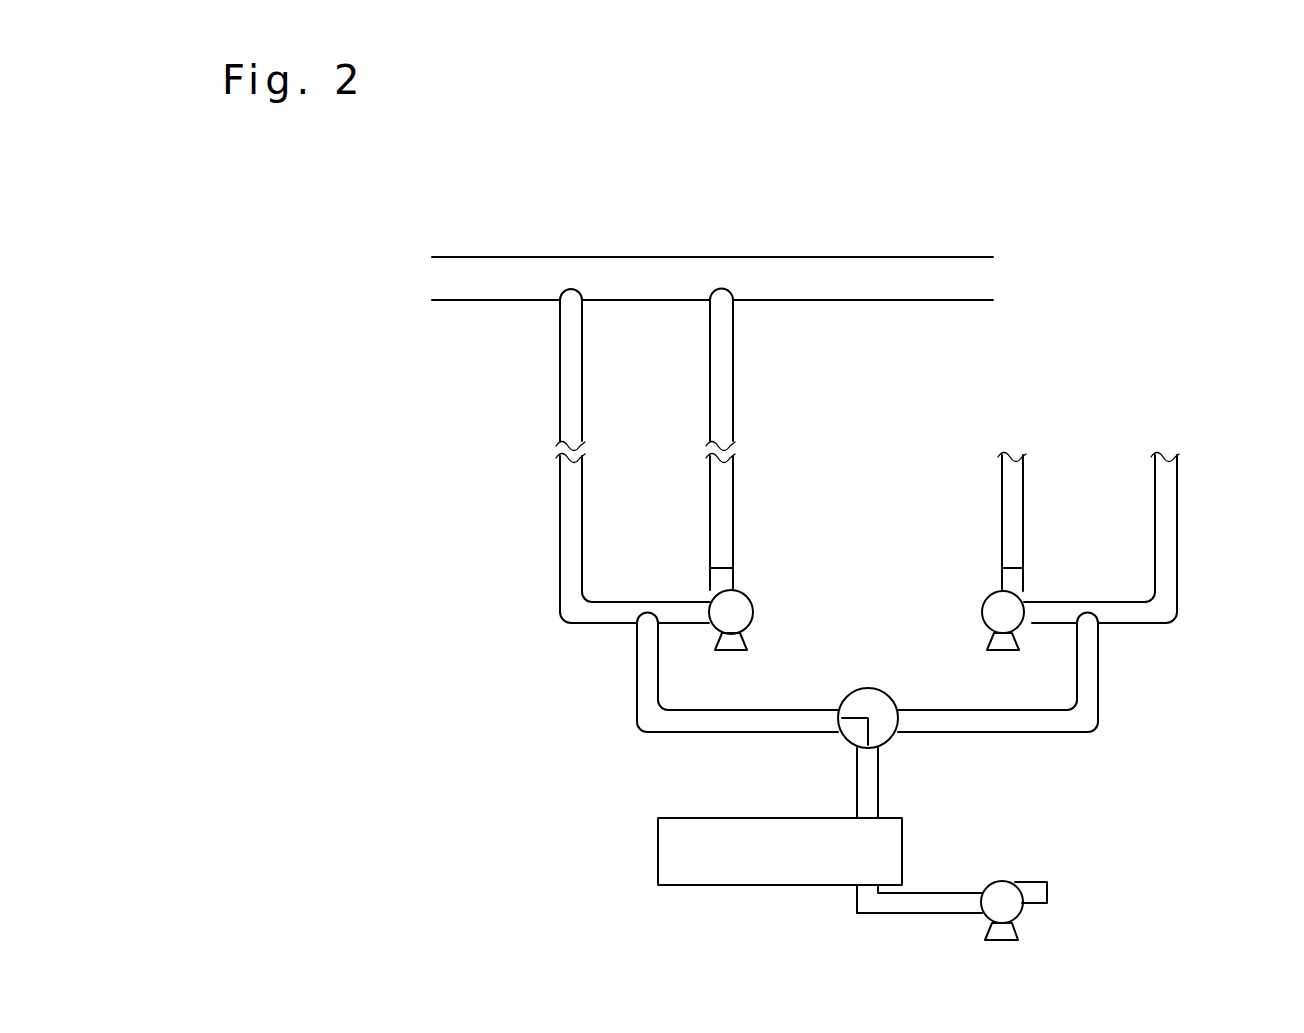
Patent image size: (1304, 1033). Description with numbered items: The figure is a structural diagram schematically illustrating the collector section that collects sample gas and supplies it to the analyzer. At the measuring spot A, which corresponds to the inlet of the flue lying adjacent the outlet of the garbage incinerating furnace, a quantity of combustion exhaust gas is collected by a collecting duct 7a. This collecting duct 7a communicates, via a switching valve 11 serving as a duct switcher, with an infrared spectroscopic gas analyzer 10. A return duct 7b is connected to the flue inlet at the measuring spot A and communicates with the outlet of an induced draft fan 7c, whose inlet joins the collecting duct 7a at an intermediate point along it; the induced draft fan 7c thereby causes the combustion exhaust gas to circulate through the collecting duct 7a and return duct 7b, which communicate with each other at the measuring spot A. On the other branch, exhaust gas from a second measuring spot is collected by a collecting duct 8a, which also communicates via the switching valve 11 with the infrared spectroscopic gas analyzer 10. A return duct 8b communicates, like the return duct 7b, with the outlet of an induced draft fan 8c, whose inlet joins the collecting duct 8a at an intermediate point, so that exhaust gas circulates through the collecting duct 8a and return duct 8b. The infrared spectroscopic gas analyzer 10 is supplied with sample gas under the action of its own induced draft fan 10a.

The measuring spot A is at (607, 268).
The collecting duct 7a is at (568, 428).
The return duct 7b is at (727, 416).
The induced draft fan 7c is at (742, 612).
The collecting duct 8a is at (1167, 506).
The return duct 8b is at (1008, 493).
The induced draft fan 8c is at (985, 612).
The infrared spectroscopic gas analyzer 10 is at (802, 823).
The induced draft fan 10a is at (1002, 890).
The switching valve 11 is at (872, 696).